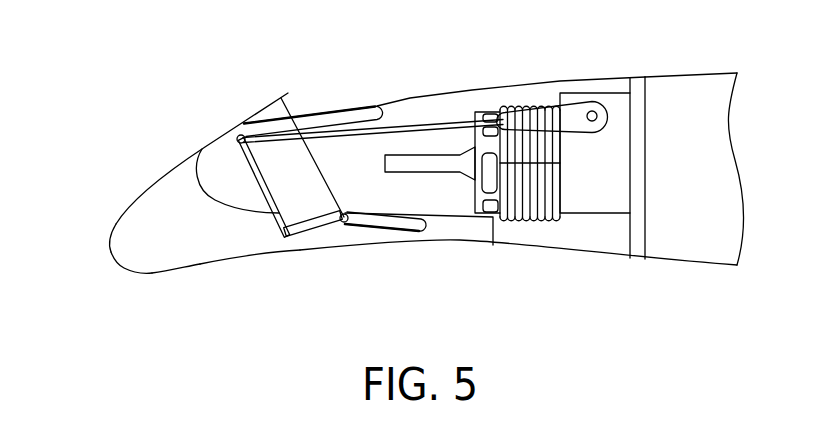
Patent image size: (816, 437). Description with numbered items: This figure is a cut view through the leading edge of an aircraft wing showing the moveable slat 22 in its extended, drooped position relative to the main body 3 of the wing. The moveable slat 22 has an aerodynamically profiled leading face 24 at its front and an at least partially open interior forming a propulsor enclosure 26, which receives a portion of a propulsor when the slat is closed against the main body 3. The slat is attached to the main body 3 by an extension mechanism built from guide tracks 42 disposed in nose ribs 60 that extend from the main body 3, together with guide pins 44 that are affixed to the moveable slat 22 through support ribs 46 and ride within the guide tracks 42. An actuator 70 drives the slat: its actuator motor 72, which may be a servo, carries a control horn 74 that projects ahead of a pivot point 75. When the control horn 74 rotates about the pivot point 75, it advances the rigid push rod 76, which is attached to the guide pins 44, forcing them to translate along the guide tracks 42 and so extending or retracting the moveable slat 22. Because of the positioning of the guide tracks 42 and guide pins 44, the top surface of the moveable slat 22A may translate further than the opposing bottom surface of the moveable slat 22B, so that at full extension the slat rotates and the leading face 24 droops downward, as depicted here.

The main body 3 is at (723, 72).
The moveable slat 22 is at (182, 163).
The top surface of the moveable slat 22A is at (120, 188).
The bottom surface of the moveable slat 22B is at (236, 280).
The aerodynamically profiled leading face 24 is at (95, 268).
The propulsor enclosure 26 is at (172, 262).
The guide tracks 42 is at (333, 117).
The guide pins 44 is at (240, 133).
The support ribs 46 is at (128, 228).
The nose ribs 60 is at (399, 108).
The actuator 70 is at (617, 170).
The actuator motor 72 is at (622, 105).
The control horn 74 is at (555, 115).
The pivot point 75 is at (591, 111).
The push rod 76 is at (441, 124).